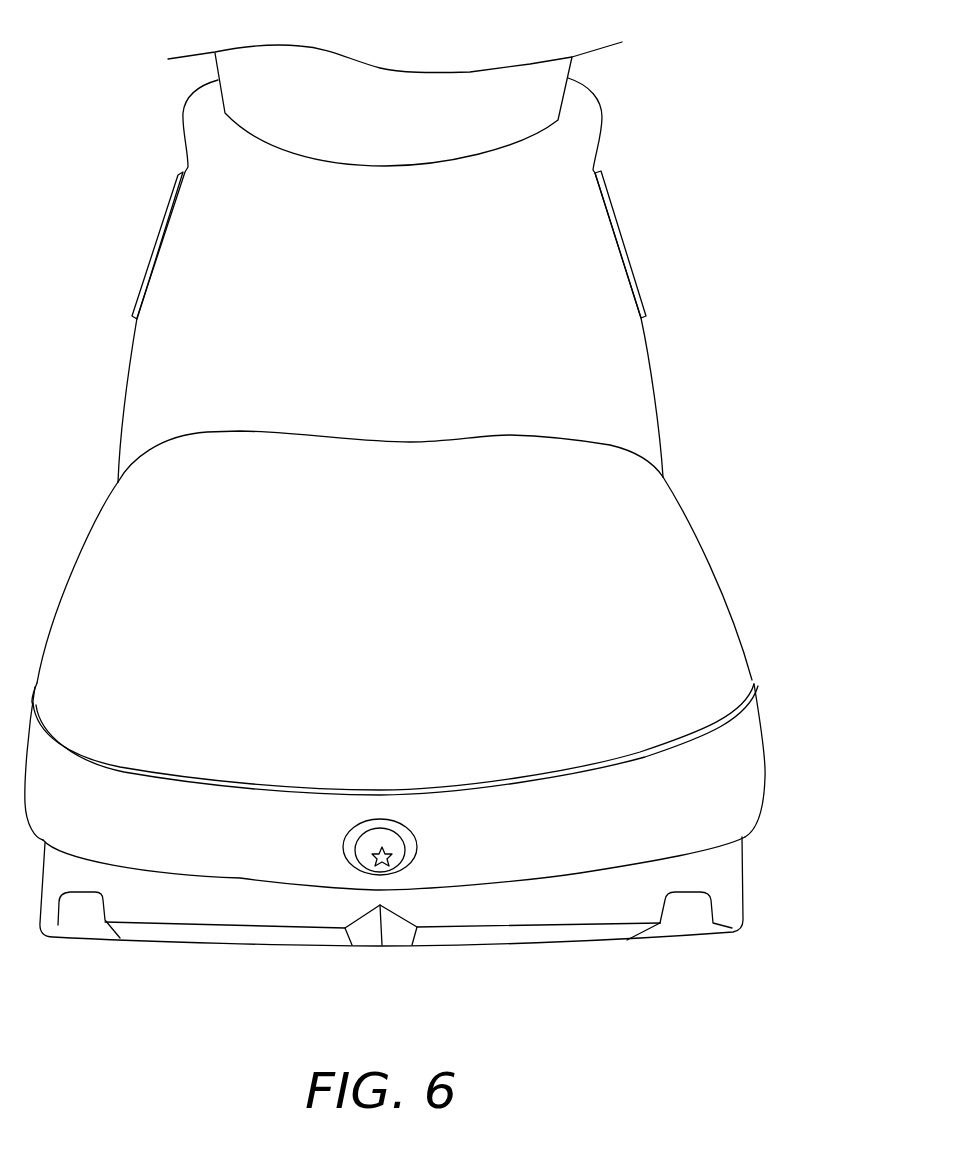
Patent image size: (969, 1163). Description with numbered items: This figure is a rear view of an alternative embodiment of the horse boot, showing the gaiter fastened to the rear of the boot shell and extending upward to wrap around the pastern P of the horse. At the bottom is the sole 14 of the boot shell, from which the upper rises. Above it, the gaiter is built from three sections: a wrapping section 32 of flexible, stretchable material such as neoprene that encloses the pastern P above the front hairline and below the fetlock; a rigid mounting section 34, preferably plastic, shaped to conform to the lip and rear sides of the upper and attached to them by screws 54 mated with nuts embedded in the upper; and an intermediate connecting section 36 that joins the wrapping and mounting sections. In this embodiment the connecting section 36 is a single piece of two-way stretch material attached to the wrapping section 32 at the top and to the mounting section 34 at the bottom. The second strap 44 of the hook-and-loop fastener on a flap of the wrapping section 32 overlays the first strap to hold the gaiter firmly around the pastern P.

The pastern P is at (406, 113).
The sole 14 is at (728, 882).
The wrapping section 32 is at (623, 343).
The mounting section 34 is at (753, 742).
The connecting section 36 is at (668, 522).
The second strap 44 is at (156, 240).
The screw 54 is at (410, 852).